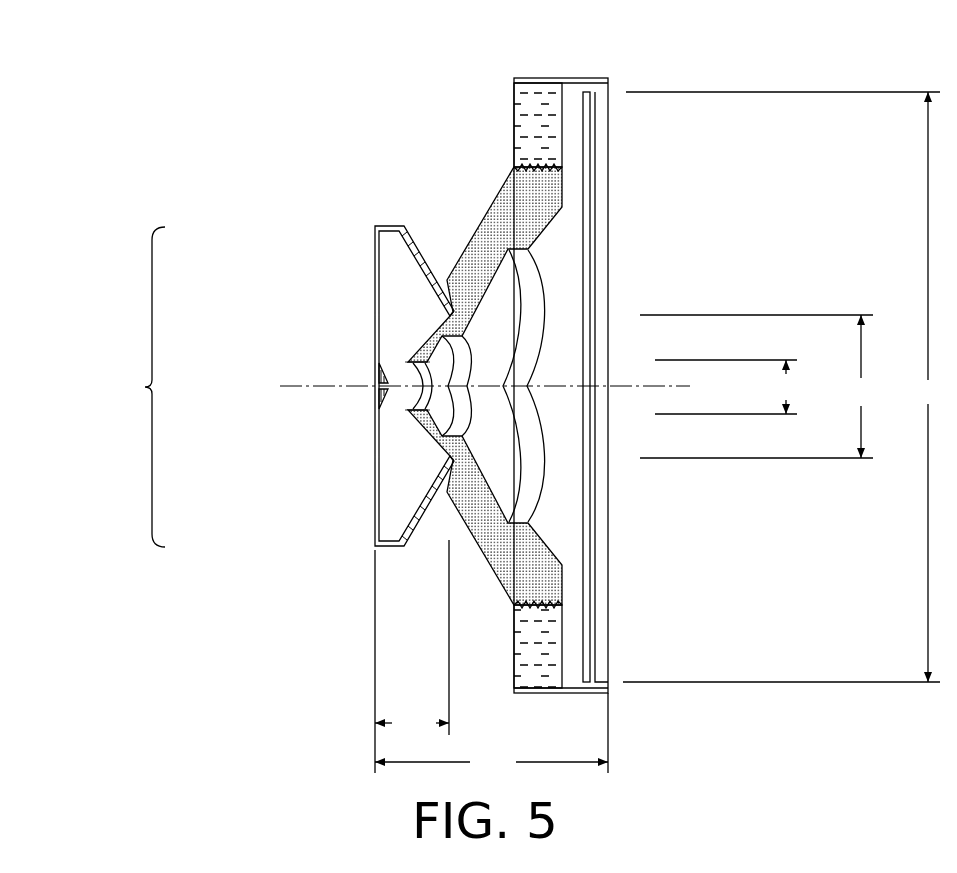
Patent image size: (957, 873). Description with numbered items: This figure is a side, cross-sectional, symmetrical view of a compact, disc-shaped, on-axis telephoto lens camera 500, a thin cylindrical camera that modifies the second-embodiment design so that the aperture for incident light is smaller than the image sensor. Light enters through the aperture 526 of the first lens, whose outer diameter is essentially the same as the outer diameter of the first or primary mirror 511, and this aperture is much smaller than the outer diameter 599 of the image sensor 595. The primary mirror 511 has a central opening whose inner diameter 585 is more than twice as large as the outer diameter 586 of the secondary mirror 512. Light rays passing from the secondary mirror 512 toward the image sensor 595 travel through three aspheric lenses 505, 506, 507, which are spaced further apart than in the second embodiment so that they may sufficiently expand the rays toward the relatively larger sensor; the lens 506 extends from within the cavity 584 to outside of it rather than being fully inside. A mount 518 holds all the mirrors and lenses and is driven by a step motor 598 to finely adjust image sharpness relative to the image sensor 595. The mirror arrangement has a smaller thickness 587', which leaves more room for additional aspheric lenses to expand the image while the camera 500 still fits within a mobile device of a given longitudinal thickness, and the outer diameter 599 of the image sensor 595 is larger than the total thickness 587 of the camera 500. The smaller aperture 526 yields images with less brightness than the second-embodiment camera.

The camera 500 is at (702, 80).
The step motor 598 is at (543, 134).
The mount 518 is at (543, 192).
The image sensor 595 is at (605, 207).
The aspheric lens 505 is at (430, 364).
The aspheric lens 506 is at (467, 362).
The aspheric lens 507 is at (525, 353).
The primary mirror 511 is at (415, 265).
The secondary mirror 512 is at (378, 372).
The aperture 526 is at (133, 387).
The cavity 584 is at (441, 408).
The outer diameter of secondary mirror 586 is at (729, 387).
The inner diameter of primary mirror opening 585 is at (759, 386).
The outer diameter of image sensor 599 is at (784, 387).
The total thickness 587 is at (491, 733).
The thickness of mirror arrangement 587' is at (412, 656).